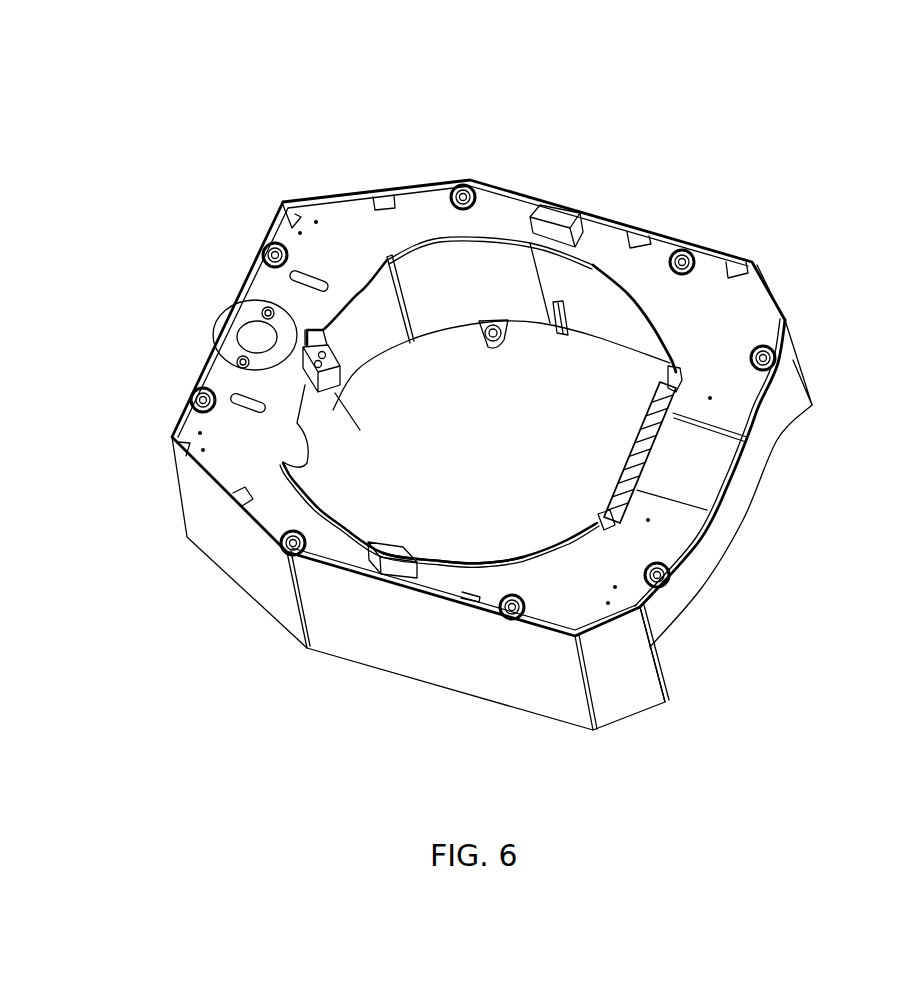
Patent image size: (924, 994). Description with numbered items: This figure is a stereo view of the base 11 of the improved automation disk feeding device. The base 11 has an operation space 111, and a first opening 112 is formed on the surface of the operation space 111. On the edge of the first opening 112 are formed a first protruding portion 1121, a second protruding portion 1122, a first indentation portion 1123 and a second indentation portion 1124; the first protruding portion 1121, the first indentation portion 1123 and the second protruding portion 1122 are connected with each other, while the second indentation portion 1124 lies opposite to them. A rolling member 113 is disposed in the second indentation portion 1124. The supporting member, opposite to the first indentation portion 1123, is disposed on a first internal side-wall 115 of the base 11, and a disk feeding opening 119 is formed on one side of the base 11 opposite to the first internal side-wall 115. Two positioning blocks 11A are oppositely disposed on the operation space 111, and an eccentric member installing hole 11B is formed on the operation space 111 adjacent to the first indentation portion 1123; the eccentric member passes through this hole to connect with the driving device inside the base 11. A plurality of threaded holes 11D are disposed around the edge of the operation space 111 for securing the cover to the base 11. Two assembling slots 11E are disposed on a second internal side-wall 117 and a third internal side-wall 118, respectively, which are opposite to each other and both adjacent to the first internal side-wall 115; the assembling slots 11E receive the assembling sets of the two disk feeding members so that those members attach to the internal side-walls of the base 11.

The base 11 is at (140, 104).
The operation space 111 is at (740, 323).
The first opening 112 is at (380, 490).
The rolling member 113 is at (622, 465).
The first internal side-wall 115 is at (347, 367).
The second internal side-wall 117 is at (620, 317).
The third internal side-wall 118 is at (440, 557).
The disk feeding opening 119 is at (740, 535).
The first protruding portion 1121 is at (293, 427).
The second protruding portion 1122 is at (360, 290).
The first indentation portion 1123 is at (310, 338).
The second indentation portion 1124 is at (650, 457).
The positioning block 11A is at (573, 210).
The eccentric member installing hole 11B is at (245, 335).
The threaded hole 11D is at (472, 178).
The assembling slot 11E is at (555, 328).